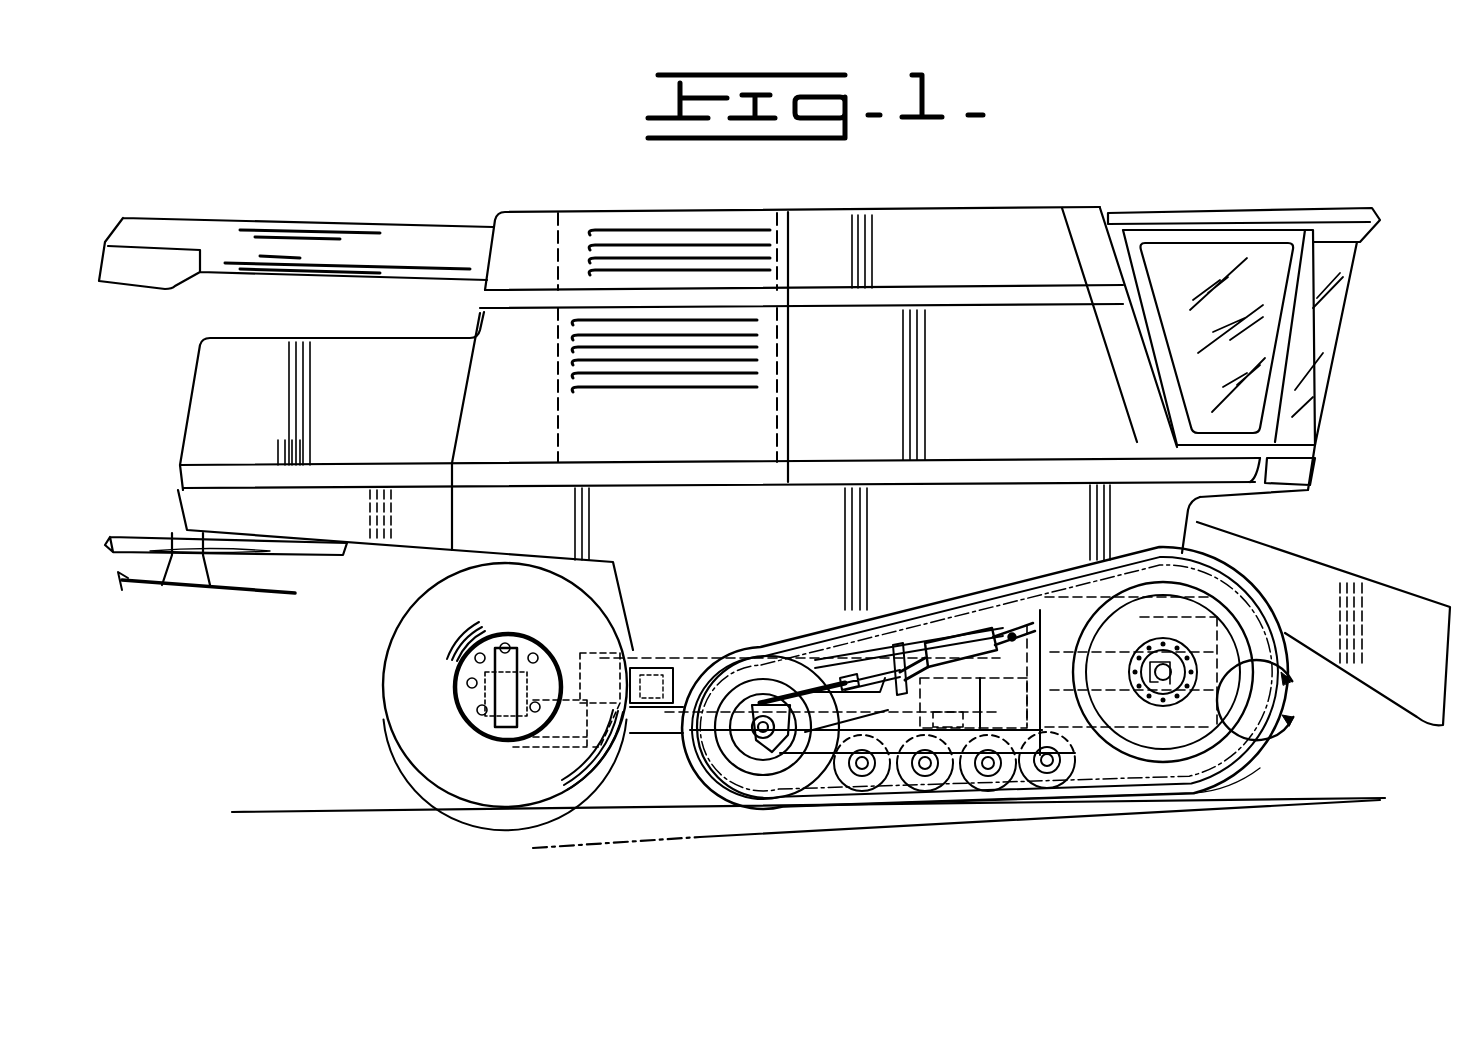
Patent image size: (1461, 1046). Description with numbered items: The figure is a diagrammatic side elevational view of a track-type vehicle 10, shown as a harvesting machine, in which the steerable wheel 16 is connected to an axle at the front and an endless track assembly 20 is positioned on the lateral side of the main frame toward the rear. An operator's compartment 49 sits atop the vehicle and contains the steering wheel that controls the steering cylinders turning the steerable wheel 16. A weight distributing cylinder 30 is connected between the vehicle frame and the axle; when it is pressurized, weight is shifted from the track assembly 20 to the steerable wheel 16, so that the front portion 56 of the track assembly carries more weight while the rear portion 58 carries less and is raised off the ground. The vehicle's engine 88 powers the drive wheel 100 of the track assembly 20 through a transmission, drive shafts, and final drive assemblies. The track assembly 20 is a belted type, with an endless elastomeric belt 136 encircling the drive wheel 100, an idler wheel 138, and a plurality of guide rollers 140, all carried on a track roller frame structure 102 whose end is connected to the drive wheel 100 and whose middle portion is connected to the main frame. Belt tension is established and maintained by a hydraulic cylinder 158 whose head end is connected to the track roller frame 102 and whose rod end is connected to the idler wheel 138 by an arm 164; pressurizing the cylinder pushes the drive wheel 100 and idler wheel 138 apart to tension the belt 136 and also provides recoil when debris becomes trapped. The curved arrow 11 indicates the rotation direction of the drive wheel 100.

The track-type vehicle 10 is at (1010, 210).
The direction of rotation arrow 11 is at (1270, 700).
The first steerable wheel 16 is at (397, 673).
The first endless track assembly 20 is at (1001, 582).
The weight distributing cylinder 30 is at (600, 653).
The operator's compartment 49 is at (1262, 238).
The front portion of the track assembly 56 is at (1181, 800).
The rear portion of the track assembly 58 is at (791, 804).
The engine 88 is at (748, 412).
The drive wheel 100 is at (1233, 593).
The track roller frame structure 102 is at (1088, 640).
The endless elastomeric belt 136 is at (813, 620).
The idler wheel 138 is at (737, 680).
The guide rollers 140 is at (913, 787).
The hydraulic cylinder 158 is at (973, 637).
The arm 164 is at (823, 660).